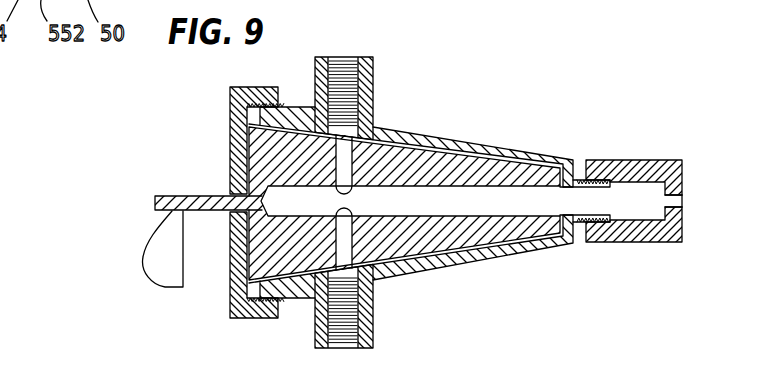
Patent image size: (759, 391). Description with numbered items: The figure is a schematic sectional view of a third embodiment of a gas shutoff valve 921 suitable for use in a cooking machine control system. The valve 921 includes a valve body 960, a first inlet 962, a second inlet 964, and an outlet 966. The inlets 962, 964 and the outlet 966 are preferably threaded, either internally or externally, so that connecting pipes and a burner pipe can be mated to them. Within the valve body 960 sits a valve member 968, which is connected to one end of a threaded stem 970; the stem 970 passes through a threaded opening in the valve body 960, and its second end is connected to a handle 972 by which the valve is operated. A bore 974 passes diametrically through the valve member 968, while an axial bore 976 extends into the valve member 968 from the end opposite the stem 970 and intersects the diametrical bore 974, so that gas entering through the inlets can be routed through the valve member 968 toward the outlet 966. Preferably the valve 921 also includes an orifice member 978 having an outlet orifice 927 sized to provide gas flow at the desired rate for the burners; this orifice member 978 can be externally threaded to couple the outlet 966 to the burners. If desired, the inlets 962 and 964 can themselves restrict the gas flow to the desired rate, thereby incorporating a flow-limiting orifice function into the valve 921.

The gas shutoff valve 921 is at (452, 103).
The outlet orifice 927 is at (682, 200).
The valve body 960 is at (315, 82).
The first inlet 962 is at (348, 56).
The second inlet 964 is at (332, 349).
The outlet 966 is at (616, 215).
The valve member 968 is at (452, 140).
The threaded stem 970 is at (205, 211).
The handle 972 is at (143, 271).
The bore 974 is at (372, 283).
The axial bore 976 is at (520, 186).
The orifice member 978 is at (661, 160).